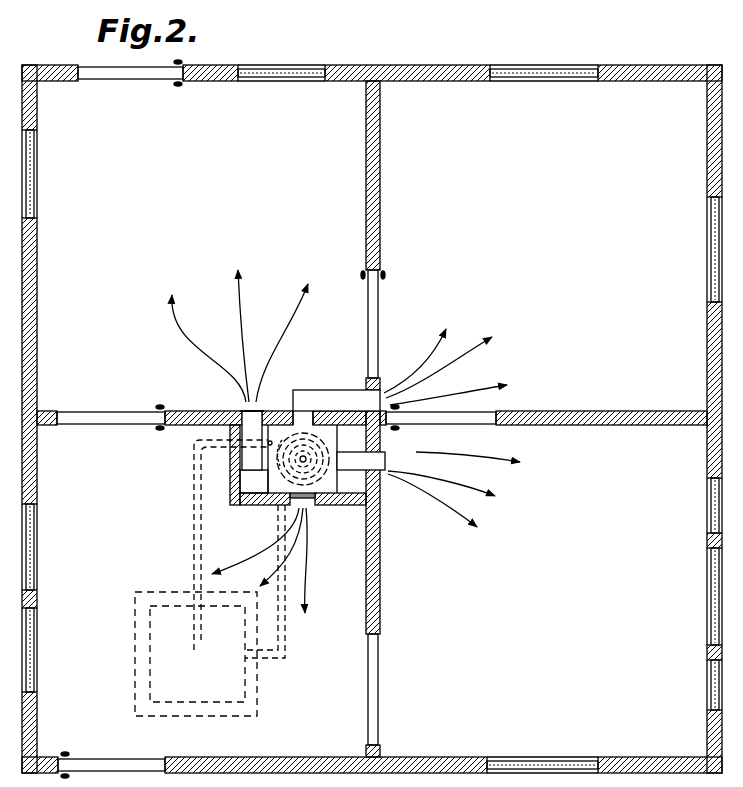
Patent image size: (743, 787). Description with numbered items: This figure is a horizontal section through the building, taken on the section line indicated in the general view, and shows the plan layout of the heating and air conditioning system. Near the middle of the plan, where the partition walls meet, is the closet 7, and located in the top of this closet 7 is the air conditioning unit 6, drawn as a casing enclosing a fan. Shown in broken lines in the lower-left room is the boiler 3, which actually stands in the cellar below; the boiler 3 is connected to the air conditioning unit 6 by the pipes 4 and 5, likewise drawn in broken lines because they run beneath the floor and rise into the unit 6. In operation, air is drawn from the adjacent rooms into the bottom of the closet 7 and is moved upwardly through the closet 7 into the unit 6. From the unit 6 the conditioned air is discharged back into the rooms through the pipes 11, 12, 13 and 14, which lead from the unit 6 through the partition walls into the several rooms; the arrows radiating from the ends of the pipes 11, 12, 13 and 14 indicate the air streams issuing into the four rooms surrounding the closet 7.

The boiler 3 is at (198, 682).
The pipe 4 is at (284, 607).
The pipe 5 is at (192, 555).
The air conditioning unit 6 is at (270, 505).
The closet 7 is at (377, 493).
The pipe 11 is at (372, 462).
The pipe 12 is at (350, 374).
The pipe 13 is at (245, 408).
The pipe 14 is at (308, 506).